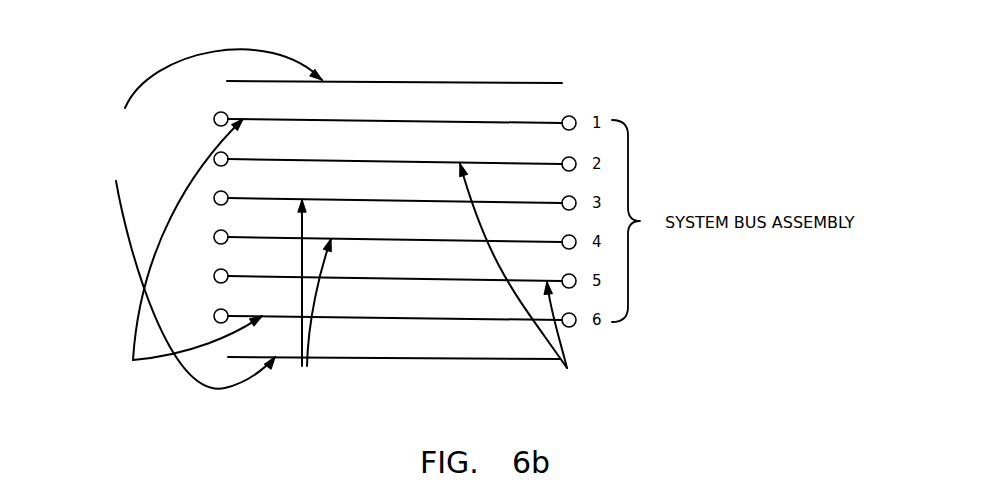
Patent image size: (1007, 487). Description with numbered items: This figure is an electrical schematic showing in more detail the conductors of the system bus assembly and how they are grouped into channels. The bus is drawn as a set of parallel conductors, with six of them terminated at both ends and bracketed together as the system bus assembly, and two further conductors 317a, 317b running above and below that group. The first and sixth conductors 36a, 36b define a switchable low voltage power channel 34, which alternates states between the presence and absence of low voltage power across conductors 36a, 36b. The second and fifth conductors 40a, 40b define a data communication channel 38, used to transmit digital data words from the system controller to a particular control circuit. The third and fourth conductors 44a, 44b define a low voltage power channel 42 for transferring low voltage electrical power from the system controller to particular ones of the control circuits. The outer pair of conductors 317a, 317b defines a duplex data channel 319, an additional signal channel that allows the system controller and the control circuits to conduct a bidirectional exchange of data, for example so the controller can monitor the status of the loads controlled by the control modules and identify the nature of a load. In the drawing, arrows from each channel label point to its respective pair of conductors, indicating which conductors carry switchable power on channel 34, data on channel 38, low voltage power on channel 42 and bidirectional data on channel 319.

The conductor 317a is at (408, 82).
The conductor 317b is at (428, 359).
The conductor 36a is at (277, 119).
The conductor 36b is at (373, 319).
The conductor 40a is at (320, 160).
The conductor 40b is at (423, 279).
The conductor 44a is at (335, 199).
The conductor 44b is at (367, 238).
The duplex data channel 319 is at (182, 218).
The switchable low voltage power channel 34 is at (163, 278).
The low voltage power channel 42 is at (301, 308).
The data communication channel 38 is at (531, 293).